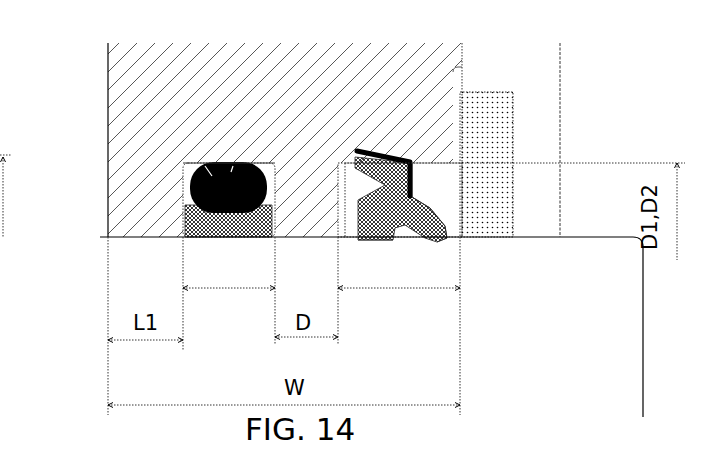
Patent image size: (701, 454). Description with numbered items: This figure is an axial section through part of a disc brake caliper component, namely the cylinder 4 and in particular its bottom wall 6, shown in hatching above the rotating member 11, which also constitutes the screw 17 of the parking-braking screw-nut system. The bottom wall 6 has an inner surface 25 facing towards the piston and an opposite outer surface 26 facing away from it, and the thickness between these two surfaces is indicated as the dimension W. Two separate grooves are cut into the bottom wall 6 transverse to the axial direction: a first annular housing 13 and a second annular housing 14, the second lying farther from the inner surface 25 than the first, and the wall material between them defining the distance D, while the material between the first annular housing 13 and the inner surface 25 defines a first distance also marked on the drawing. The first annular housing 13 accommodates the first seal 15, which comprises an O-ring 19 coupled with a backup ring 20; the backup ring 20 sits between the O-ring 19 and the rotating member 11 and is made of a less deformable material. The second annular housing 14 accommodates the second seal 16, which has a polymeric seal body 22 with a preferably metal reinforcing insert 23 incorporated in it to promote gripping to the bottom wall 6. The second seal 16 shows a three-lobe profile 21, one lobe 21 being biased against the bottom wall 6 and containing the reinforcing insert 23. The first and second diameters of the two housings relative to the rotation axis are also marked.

The cylinder 4 is at (285, 129).
The bottom wall 6 is at (368, 90).
The inner surface 25 is at (108, 113).
The first annular housing 13 is at (190, 166).
The backup ring 20 is at (203, 218).
The O-ring 19 is at (205, 164).
The first seal 15 is at (233, 165).
The second annular housing 14 is at (363, 195).
The three-lobe profile 21 is at (353, 162).
The reinforcing insert 23 is at (399, 158).
The seal body 22 is at (427, 211).
The second seal 16 is at (393, 216).
The outer surface 26 is at (462, 118).
The rotating member 11 is at (371, 345).
The screw 17 is at (563, 367).